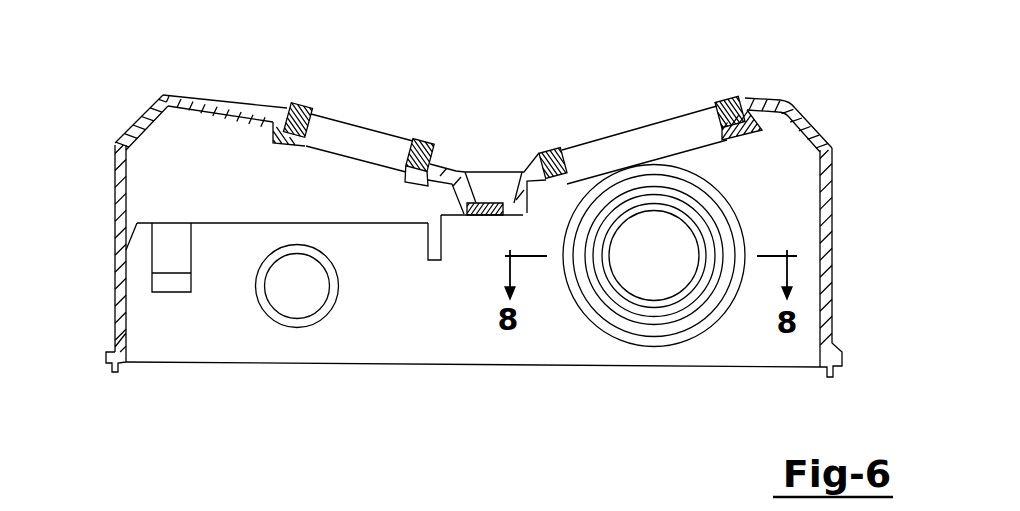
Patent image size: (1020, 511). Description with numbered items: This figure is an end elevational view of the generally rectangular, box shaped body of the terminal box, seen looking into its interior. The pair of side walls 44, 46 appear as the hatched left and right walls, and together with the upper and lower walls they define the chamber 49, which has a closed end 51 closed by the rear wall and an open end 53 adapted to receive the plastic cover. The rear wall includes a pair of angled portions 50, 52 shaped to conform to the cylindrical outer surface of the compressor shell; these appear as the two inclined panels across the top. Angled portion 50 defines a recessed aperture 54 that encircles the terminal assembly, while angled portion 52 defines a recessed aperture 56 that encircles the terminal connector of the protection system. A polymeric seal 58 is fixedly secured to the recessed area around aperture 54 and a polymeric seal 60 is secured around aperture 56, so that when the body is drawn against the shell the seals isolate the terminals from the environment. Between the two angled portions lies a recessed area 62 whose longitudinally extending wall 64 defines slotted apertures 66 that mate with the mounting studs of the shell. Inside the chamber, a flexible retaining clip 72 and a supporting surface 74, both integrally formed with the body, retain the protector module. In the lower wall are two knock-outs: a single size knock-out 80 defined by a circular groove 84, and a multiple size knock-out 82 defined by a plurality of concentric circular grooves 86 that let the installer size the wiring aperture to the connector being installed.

The side wall 44 is at (118, 244).
The side wall 46 is at (828, 268).
The chamber 49 is at (182, 155).
The angled portion 50 is at (750, 108).
The closed end 51 is at (468, 110).
The angled portion 52 is at (205, 108).
The open end 53 is at (282, 393).
The recessed aperture 54 is at (717, 142).
The recessed aperture 56 is at (305, 147).
The polymeric seal 58 is at (547, 148).
The polymeric seal 60 is at (292, 104).
The recessed area 62 is at (493, 185).
The longitudinally extending wall 64 is at (478, 200).
The slotted aperture 66 is at (497, 216).
The flexible retaining clip 72 is at (165, 290).
The supporting surface 74 is at (432, 262).
The knock-out 80 is at (278, 298).
The knock-out 82 is at (636, 270).
The circular groove 84 is at (302, 325).
The concentric circular groove 86 is at (581, 309).